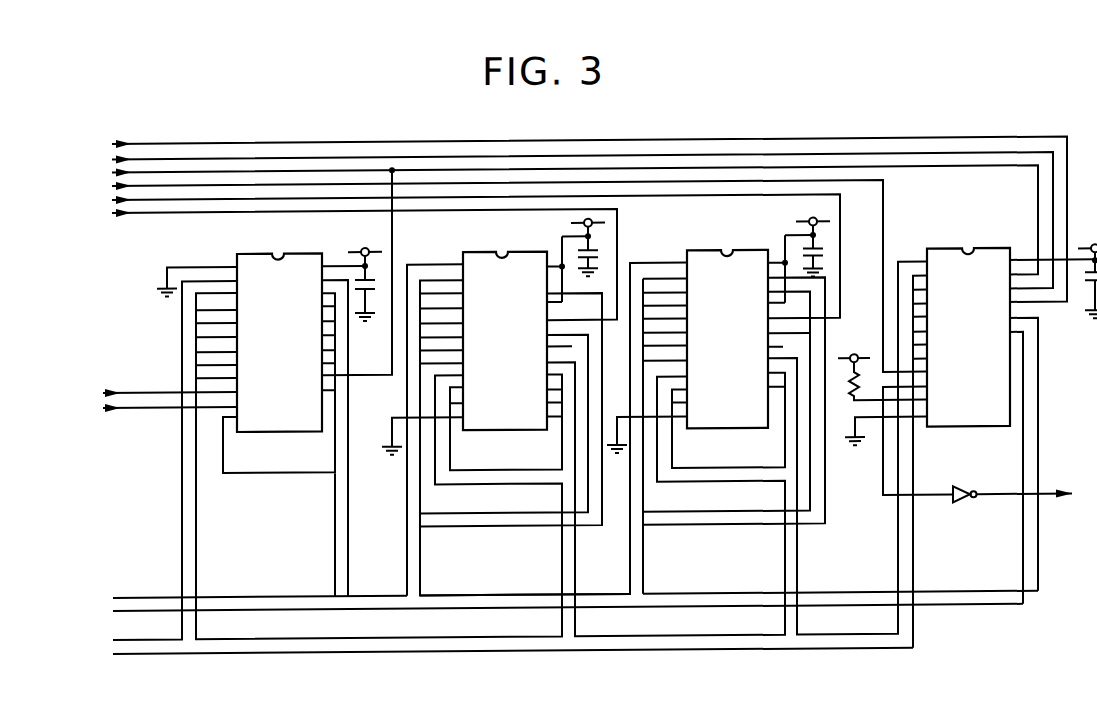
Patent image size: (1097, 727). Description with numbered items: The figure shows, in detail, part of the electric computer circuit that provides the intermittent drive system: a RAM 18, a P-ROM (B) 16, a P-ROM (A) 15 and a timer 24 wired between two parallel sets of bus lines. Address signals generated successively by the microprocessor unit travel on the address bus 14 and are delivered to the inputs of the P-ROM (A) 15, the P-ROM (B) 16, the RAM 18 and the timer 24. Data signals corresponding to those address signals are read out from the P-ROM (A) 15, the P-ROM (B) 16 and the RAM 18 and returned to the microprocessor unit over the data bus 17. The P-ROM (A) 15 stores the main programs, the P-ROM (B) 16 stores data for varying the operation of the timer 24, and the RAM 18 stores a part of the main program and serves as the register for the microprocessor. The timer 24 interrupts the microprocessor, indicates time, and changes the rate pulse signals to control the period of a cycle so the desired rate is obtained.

The RAM 18 is at (260, 256).
The P-ROM (B) 16 is at (512, 255).
The P-ROM (A) 15 is at (740, 255).
The timer 24 is at (985, 255).
The address bus 14 is at (290, 598).
The data bus 17 is at (367, 654).